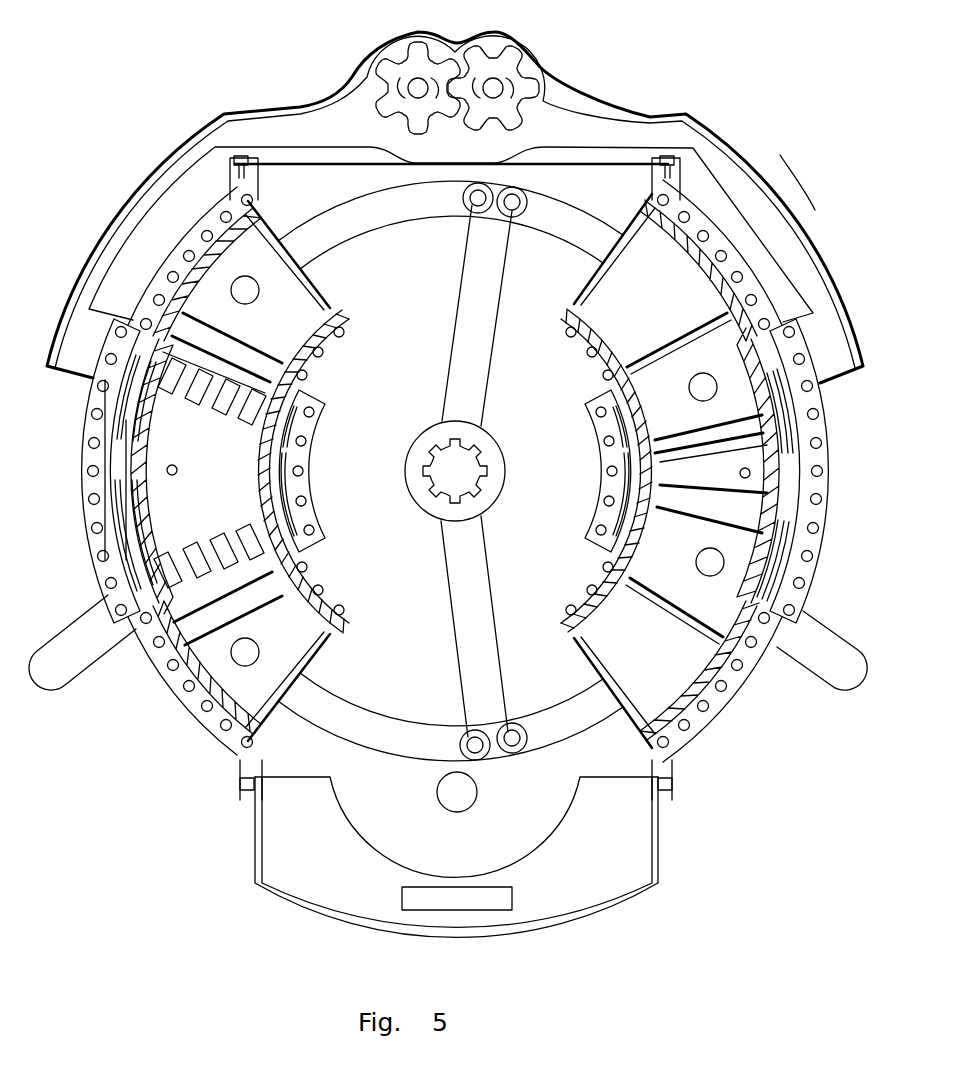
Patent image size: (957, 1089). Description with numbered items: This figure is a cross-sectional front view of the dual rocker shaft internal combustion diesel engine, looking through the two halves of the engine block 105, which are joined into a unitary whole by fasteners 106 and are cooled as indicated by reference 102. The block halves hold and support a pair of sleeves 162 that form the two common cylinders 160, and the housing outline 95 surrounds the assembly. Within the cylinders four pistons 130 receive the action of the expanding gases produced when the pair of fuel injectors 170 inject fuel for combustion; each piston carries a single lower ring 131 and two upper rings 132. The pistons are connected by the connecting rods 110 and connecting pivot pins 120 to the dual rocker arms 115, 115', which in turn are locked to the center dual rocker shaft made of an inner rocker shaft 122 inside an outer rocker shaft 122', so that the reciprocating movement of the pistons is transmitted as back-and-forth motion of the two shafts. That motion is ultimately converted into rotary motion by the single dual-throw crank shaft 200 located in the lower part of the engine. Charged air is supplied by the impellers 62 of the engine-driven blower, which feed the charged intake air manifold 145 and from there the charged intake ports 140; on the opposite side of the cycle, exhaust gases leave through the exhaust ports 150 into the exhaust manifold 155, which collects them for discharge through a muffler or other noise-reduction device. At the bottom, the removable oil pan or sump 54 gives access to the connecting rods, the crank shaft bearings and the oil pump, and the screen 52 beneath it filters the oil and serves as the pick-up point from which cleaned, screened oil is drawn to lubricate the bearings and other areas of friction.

The impellers 62 is at (520, 46).
The housing 95 is at (575, 88).
The charged intake air manifold 145 is at (720, 150).
The sleeves 162 is at (268, 196).
The connecting rods 110 is at (342, 243).
The connecting pivot pins 120 is at (259, 284).
The pistons 130 is at (291, 345).
The engine block cooling 102 is at (316, 400).
The rocker arm 115 is at (503, 315).
The rocker arm 115' is at (499, 626).
The inner rocker shaft 122 is at (487, 471).
The outer rocker shaft 122' is at (499, 447).
The cylinders 160 is at (238, 510).
The charged intake ports 140 is at (105, 455).
The fuel injectors 170 is at (110, 515).
The exhaust ports 150 is at (115, 580).
The fasteners 106 is at (822, 452).
The engine block 105 is at (740, 745).
The exhaust manifold 155 is at (855, 660).
The upper piston rings 132 is at (705, 520).
The lower piston ring 131 is at (745, 478).
The crank shaft 200 is at (455, 812).
The oil pan or sump 54 is at (645, 858).
The screen 52 is at (475, 910).